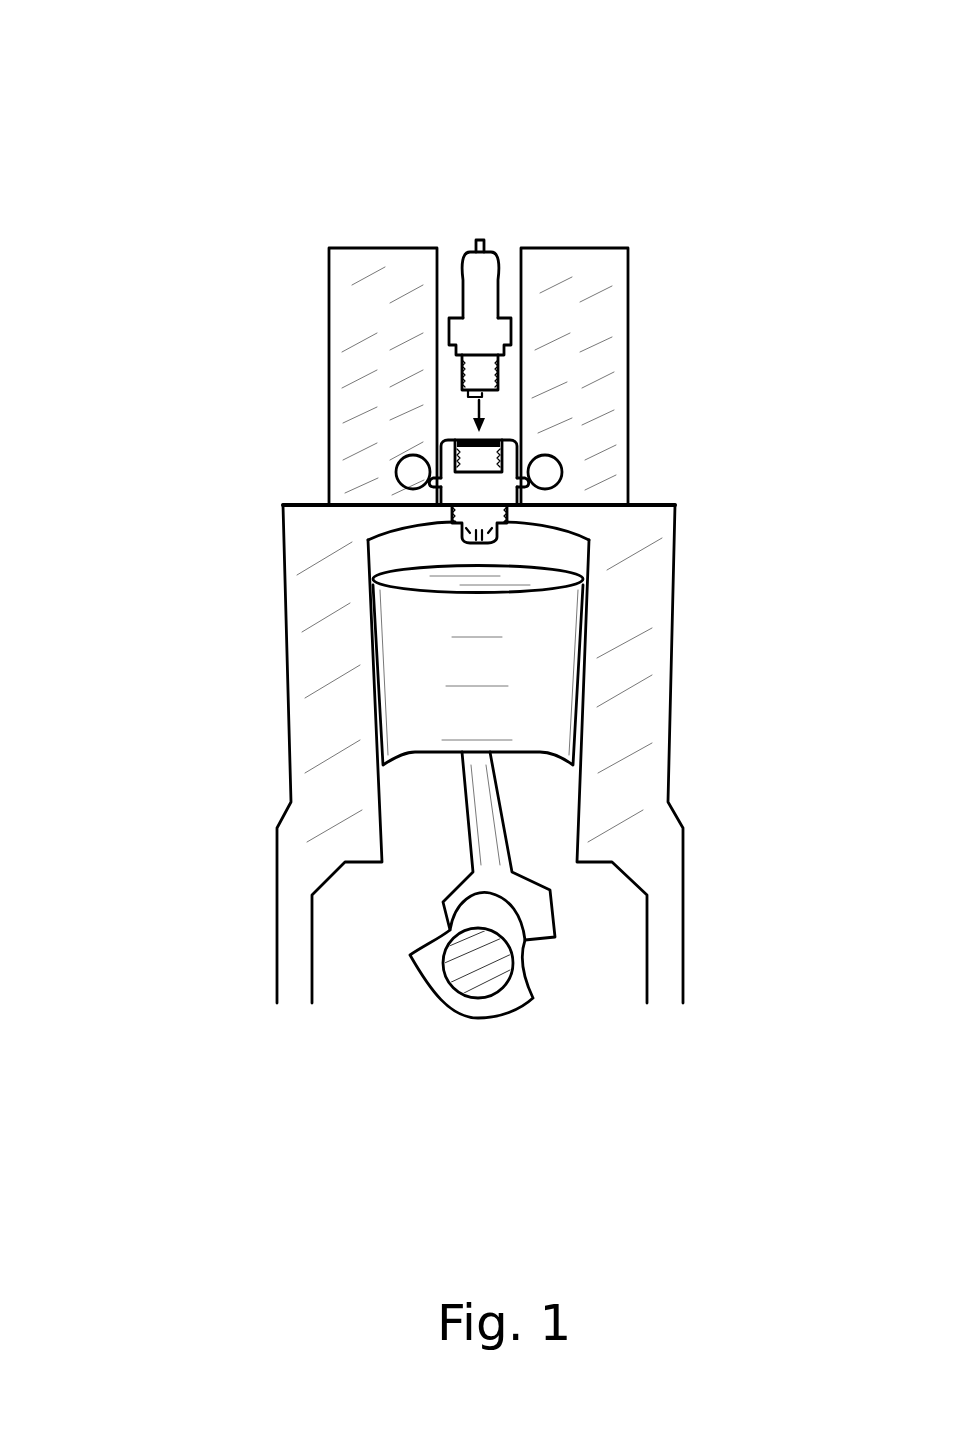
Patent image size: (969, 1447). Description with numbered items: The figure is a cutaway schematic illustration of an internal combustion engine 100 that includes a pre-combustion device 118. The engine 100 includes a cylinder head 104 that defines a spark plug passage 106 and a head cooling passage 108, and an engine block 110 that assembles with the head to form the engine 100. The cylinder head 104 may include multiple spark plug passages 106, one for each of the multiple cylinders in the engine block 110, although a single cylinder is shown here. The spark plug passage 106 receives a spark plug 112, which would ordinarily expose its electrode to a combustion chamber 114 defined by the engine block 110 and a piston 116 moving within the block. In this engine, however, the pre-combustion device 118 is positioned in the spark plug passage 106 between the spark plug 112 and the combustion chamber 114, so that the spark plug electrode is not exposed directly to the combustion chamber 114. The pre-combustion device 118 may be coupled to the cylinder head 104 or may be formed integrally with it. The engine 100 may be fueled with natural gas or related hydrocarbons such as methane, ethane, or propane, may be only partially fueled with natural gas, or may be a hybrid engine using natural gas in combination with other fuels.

The internal combustion engine 100 is at (96, 74).
The cylinder head 104 is at (603, 255).
The spark plug passage 106 is at (447, 232).
The head cooling passage 108 is at (405, 473).
The engine block 110 is at (310, 662).
The spark plug 112 is at (487, 265).
The combustion chamber 114 is at (385, 557).
The piston 116 is at (413, 720).
The pre-combustion device 118 is at (450, 458).